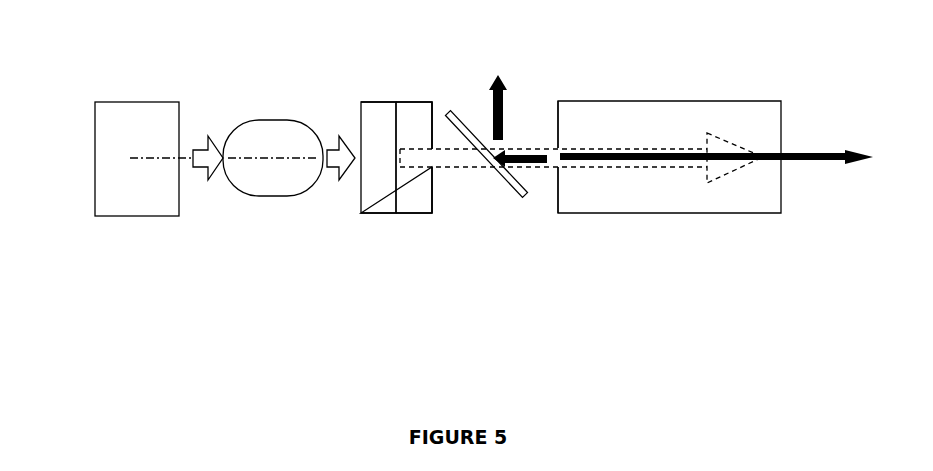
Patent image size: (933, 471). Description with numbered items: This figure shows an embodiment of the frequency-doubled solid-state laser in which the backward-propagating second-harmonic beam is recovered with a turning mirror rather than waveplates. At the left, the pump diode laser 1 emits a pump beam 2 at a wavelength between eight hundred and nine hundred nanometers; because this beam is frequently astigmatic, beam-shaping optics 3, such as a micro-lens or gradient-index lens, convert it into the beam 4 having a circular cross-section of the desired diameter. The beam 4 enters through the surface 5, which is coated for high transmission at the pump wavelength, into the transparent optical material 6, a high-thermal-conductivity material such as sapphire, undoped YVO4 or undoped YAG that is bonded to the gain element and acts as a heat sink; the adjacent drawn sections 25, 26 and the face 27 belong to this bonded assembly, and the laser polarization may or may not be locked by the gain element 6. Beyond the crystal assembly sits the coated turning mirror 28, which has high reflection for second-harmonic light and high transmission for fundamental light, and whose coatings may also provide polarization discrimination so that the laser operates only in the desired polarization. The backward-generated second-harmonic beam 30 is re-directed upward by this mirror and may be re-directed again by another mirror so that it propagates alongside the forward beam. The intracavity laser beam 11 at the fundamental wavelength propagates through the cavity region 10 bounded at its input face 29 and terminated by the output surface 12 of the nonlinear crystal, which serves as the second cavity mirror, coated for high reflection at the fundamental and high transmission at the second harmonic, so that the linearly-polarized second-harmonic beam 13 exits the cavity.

The pump diode laser 1 is at (138, 115).
The pump beam 2 is at (212, 163).
The beam-shaping optics 3 is at (287, 143).
The shaped pump beam 4 is at (342, 160).
The input surface 5 is at (357, 113).
The transparent optical material 6 is at (377, 202).
The first crystal section 25 is at (395, 123).
The second crystal section 26 is at (420, 115).
The crystal output face 27 is at (433, 205).
The coated turning mirror 28 is at (446, 110).
The re-directed backward-generated second-harmonic beam 30 is at (503, 102).
The output surface of the nonlinear crystal 12 is at (782, 118).
The input face of housing 29 is at (559, 195).
The beam path 10 is at (687, 202).
The intracavity laser beam 11 is at (758, 172).
The output second-harmonic beam 13 is at (833, 147).